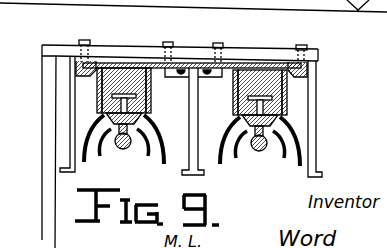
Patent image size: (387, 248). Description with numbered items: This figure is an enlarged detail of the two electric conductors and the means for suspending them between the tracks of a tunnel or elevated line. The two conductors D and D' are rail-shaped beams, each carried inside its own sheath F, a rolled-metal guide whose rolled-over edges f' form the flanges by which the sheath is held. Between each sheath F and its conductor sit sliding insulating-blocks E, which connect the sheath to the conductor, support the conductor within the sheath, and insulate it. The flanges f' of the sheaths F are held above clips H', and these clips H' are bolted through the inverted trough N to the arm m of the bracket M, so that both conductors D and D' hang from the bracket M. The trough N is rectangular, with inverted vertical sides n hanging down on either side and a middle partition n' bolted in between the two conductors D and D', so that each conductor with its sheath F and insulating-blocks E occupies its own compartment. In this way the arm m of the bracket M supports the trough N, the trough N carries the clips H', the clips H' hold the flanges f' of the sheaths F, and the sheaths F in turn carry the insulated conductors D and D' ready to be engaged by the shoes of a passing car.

The insulating-block E is at (118, 86).
The clip H' is at (195, 46).
The rolled-over edge f' is at (193, 41).
The arm m is at (194, 45).
The sheath F is at (151, 98).
The middle partition n' is at (201, 121).
The vertical side n is at (181, 114).
The inverted trough N is at (312, 137).
The bracket M is at (44, 117).
The conductor D is at (124, 126).
The conductor D' is at (260, 132).